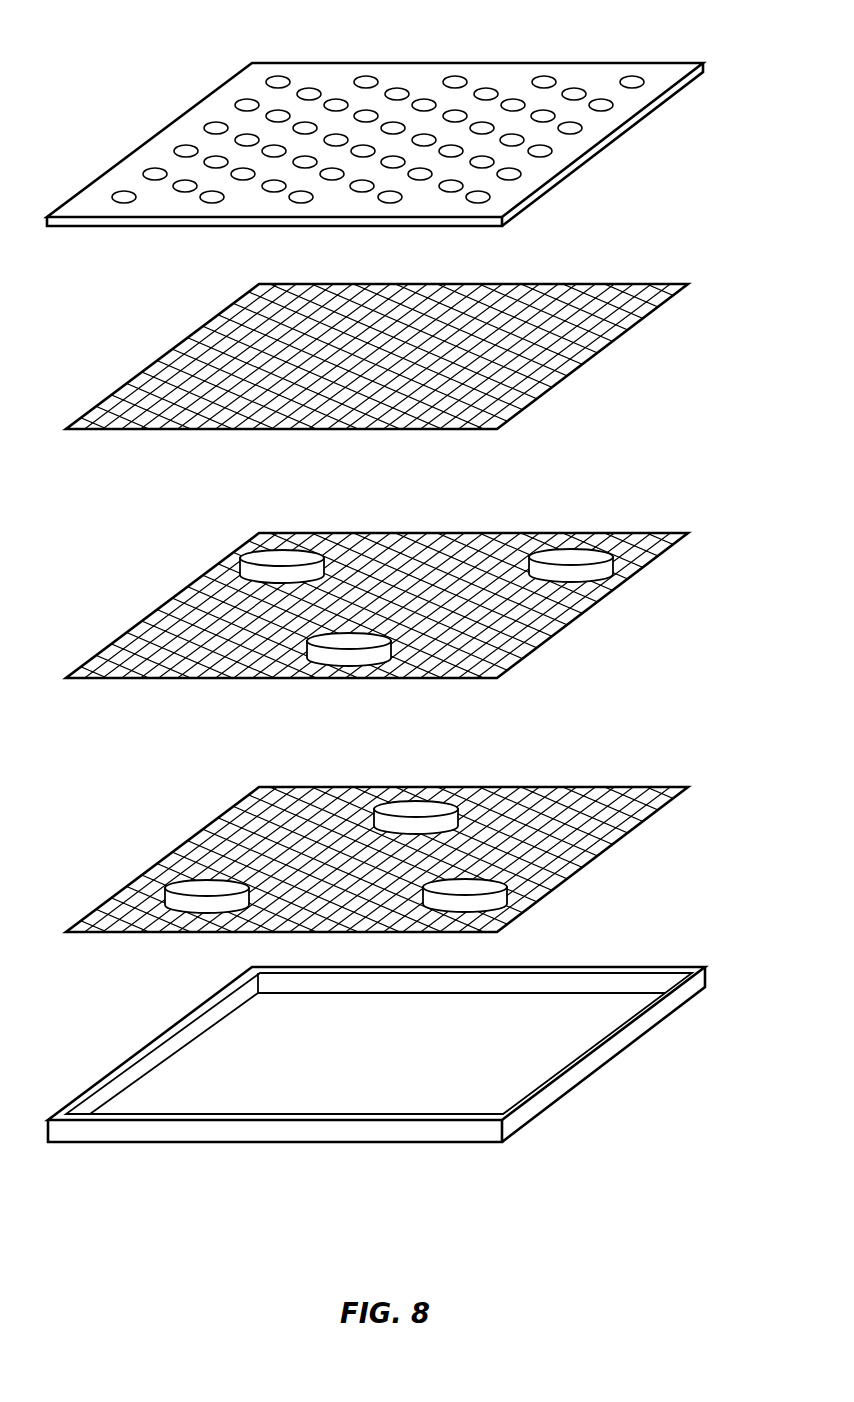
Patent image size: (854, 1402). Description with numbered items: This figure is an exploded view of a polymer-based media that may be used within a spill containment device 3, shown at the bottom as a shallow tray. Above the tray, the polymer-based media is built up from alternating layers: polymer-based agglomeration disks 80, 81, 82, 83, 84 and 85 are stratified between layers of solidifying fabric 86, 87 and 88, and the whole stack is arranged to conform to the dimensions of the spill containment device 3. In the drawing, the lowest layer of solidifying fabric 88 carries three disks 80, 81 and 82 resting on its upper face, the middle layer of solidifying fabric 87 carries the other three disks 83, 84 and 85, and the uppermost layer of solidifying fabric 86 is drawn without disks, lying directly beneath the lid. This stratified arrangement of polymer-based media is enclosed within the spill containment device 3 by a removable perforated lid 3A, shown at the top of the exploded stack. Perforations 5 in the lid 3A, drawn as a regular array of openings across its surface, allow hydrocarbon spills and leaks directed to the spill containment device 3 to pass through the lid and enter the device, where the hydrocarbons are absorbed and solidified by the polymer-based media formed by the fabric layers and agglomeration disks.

The spill containment device 3 is at (383, 1023).
The removable perforated lid 3A is at (391, 115).
The perforations 5 is at (378, 105).
The polymer-based agglomeration disk 80 is at (174, 868).
The polymer-based agglomeration disk 81 is at (531, 890).
The polymer-based agglomeration disk 82 is at (441, 789).
The polymer-based agglomeration disk 83 is at (367, 677).
The polymer-based agglomeration disk 84 is at (636, 560).
The polymer-based agglomeration disk 85 is at (238, 558).
The layer of solidifying fabric 86 is at (367, 345).
The layer of solidifying fabric 87 is at (367, 594).
The layer of solidifying fabric 88 is at (367, 848).